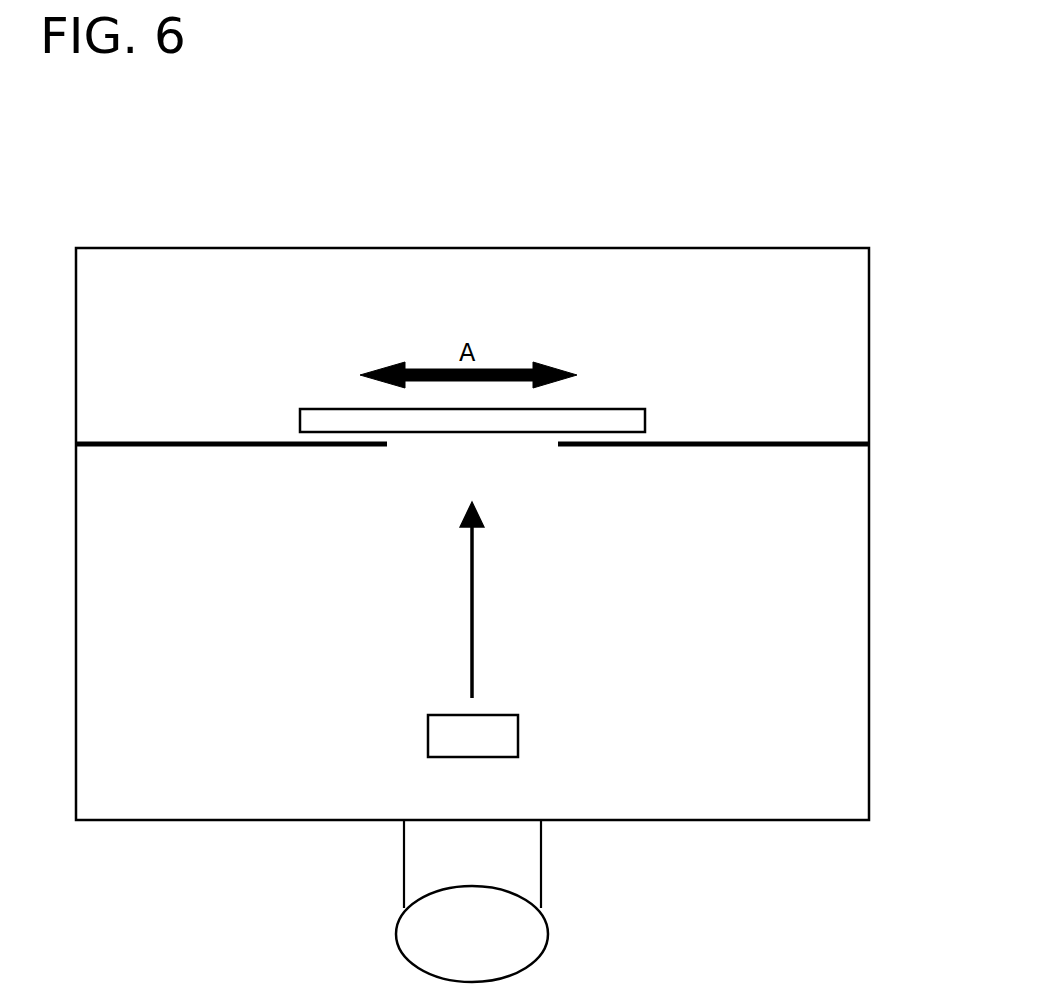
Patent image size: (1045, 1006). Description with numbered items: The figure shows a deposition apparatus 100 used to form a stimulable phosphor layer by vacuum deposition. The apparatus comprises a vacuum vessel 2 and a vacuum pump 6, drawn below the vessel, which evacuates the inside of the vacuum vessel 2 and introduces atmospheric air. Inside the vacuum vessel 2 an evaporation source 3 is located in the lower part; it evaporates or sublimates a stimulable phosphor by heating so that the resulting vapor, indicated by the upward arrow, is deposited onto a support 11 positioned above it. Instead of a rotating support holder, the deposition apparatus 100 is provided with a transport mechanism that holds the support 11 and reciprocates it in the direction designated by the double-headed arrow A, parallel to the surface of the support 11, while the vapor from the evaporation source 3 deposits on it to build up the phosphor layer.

The deposition apparatus 100 is at (481, 233).
The vacuum vessel 2 is at (869, 420).
The support 11 is at (645, 421).
The evaporation source 3 is at (518, 735).
The vacuum pump 6 is at (548, 932).